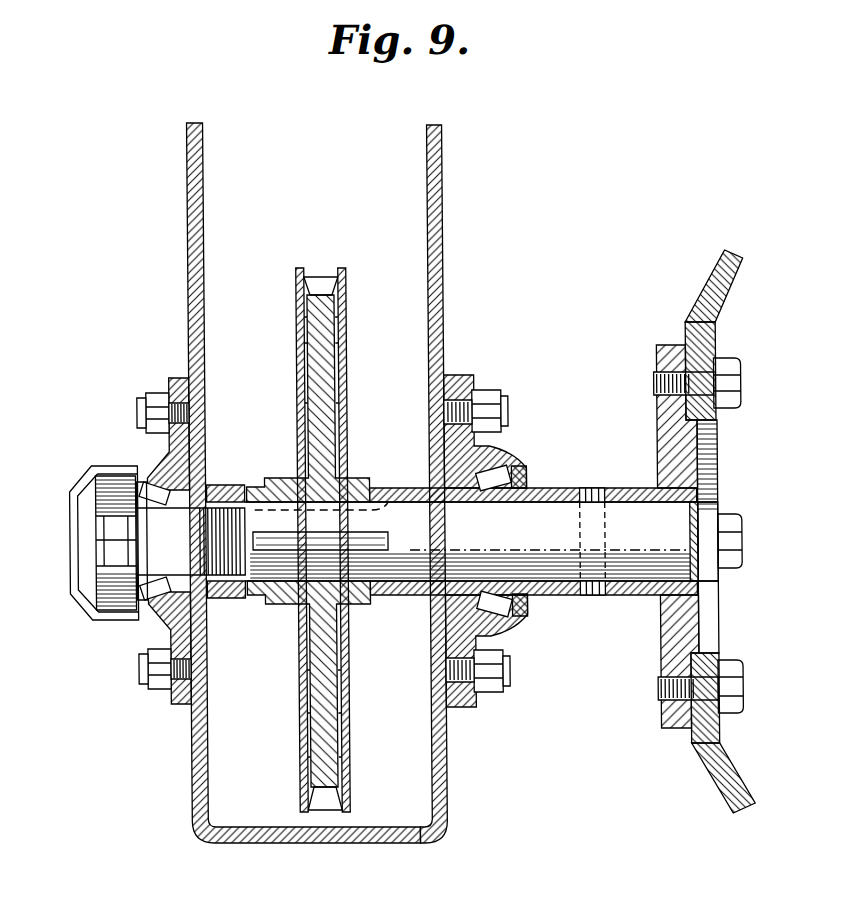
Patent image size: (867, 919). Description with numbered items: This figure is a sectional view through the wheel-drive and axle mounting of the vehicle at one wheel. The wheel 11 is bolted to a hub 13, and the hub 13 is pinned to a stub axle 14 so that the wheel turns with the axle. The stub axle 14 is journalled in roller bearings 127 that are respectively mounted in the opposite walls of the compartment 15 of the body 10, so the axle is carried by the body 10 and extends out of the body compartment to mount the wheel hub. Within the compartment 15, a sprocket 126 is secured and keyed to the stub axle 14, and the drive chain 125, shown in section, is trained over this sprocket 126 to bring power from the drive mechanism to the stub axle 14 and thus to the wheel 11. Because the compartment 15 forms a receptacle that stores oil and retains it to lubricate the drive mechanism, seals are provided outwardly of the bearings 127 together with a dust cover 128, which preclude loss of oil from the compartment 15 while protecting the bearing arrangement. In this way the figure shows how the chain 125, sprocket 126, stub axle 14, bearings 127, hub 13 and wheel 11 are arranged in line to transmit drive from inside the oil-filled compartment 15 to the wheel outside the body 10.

The body 10 is at (186, 177).
The compartment 15 is at (443, 170).
The drive chain 125 is at (299, 285).
The sprocket 126 is at (318, 341).
The roller bearings 127 is at (150, 470).
The stub axle 14 is at (537, 501).
The hub 13 is at (622, 488).
The wheel 11 is at (707, 292).
The dust cover 128 is at (103, 628).